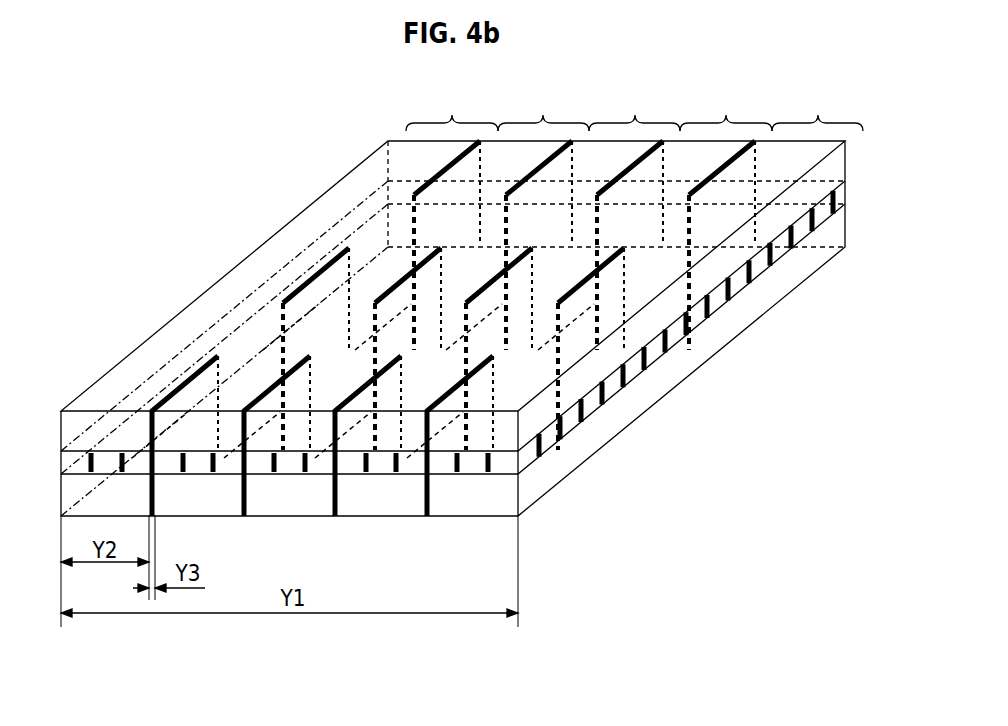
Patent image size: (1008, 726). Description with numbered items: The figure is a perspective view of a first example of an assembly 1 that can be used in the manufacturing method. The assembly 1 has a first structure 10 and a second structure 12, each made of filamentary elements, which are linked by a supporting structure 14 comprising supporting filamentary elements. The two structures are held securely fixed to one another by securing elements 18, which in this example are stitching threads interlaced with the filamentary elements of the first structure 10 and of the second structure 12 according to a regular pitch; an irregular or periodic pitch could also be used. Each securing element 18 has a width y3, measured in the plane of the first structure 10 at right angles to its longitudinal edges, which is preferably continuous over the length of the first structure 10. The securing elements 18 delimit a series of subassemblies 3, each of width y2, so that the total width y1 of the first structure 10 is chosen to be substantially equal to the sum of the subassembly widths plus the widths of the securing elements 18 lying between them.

The assembly 1 is at (641, 62).
The subassembly 3 is at (818, 115).
The first structure 10 is at (780, 218).
The second structure 12 is at (563, 458).
The supporting structure 14 is at (767, 267).
The securing element 18 is at (450, 164).